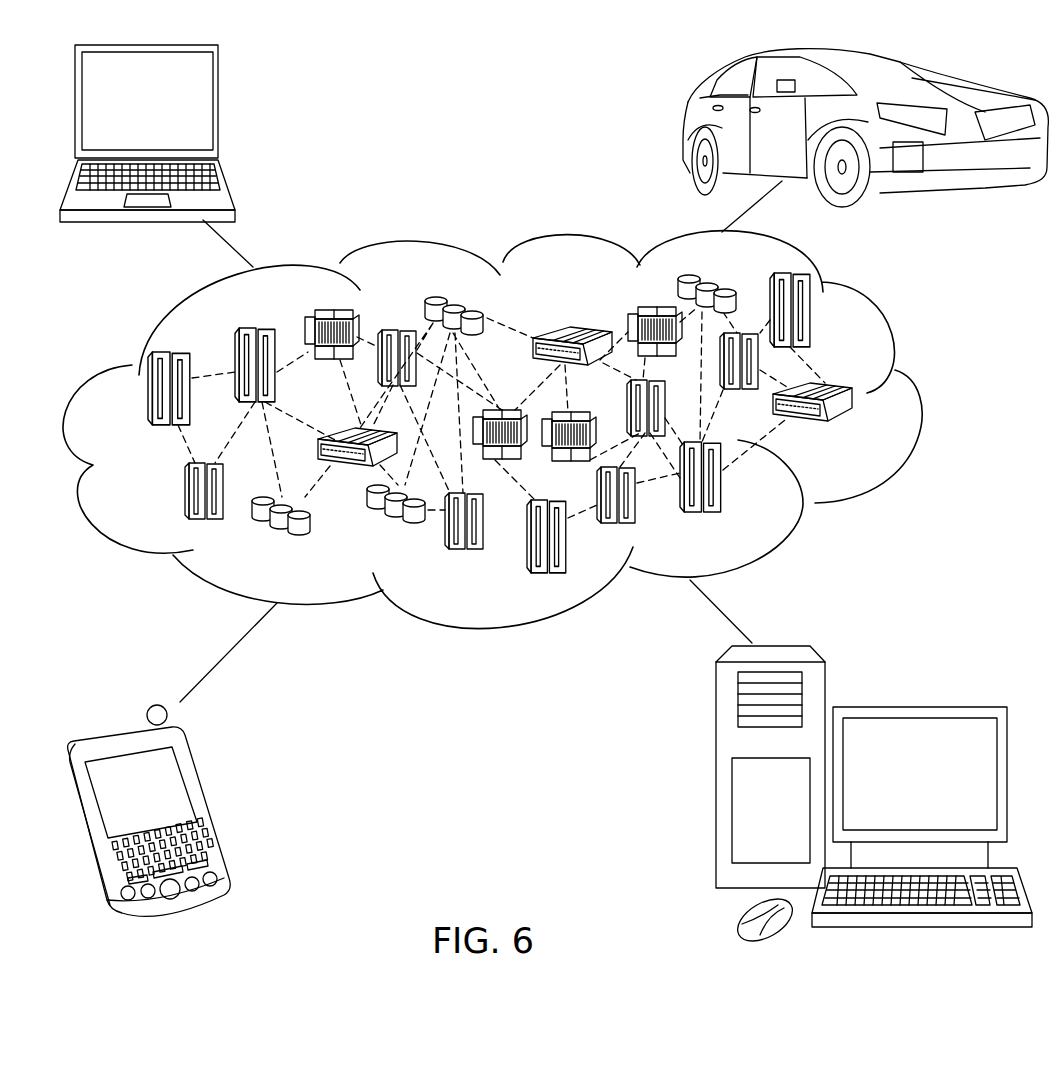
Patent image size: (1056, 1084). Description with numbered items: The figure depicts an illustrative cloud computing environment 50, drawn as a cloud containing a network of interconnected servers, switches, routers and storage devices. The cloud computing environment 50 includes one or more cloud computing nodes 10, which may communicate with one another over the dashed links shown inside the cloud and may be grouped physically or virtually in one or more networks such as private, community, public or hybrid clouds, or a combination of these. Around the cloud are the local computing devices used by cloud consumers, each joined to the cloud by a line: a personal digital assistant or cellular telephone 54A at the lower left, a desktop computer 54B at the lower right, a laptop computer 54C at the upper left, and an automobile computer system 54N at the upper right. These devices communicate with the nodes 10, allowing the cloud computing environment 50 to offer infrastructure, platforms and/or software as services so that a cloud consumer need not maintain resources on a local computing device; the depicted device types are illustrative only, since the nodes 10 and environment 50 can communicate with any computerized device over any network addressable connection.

The cloud computing node 10 is at (860, 434).
The cloud computing environment 50 is at (917, 401).
The personal digital assistant or cellular telephone 54A is at (212, 805).
The desktop computer 54B is at (916, 706).
The laptop computer 54C is at (218, 112).
The automobile computer system 54N is at (684, 127).